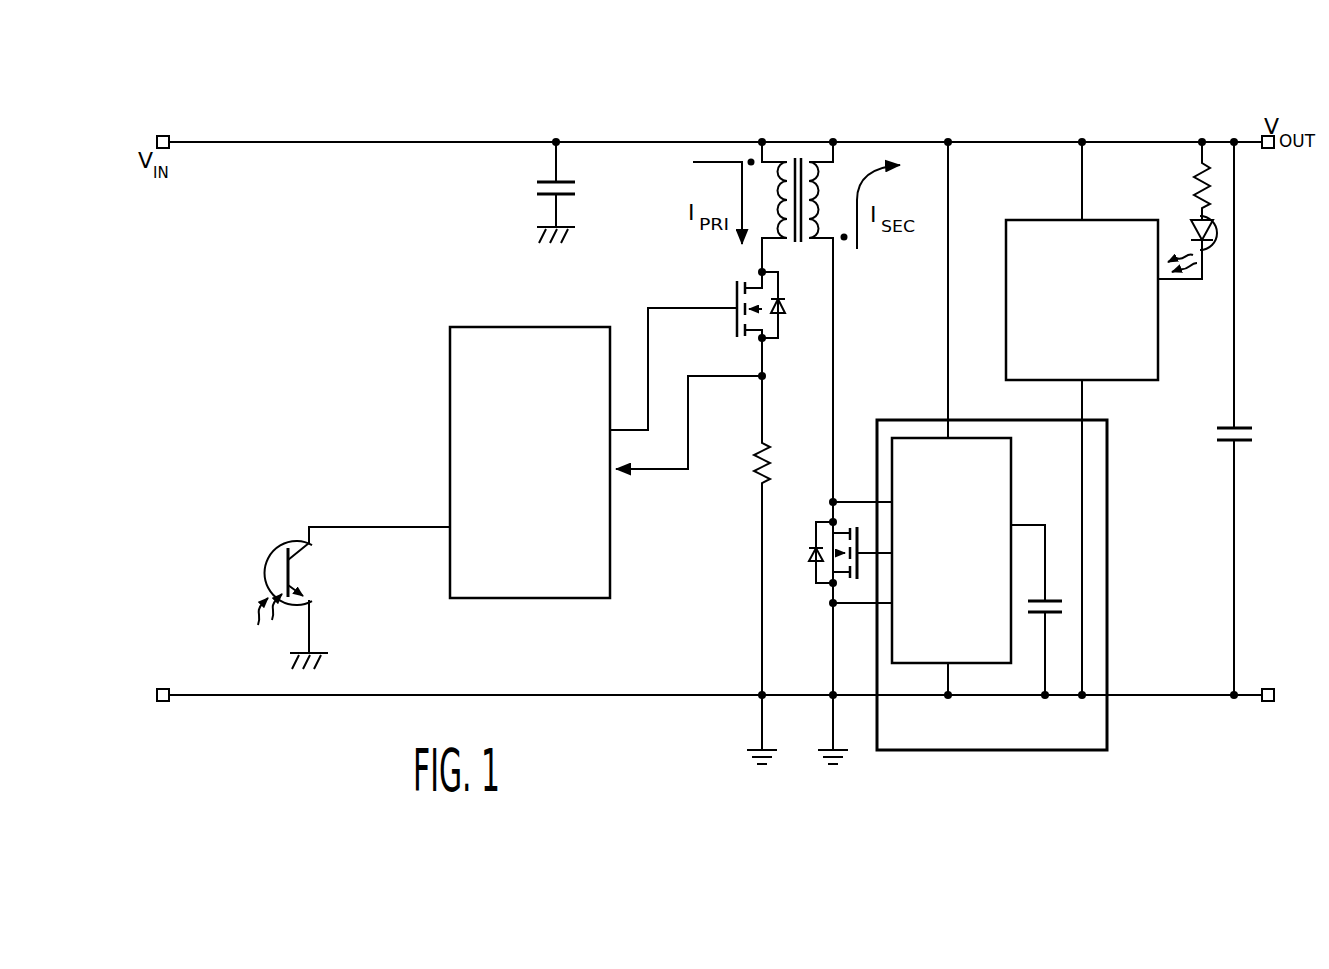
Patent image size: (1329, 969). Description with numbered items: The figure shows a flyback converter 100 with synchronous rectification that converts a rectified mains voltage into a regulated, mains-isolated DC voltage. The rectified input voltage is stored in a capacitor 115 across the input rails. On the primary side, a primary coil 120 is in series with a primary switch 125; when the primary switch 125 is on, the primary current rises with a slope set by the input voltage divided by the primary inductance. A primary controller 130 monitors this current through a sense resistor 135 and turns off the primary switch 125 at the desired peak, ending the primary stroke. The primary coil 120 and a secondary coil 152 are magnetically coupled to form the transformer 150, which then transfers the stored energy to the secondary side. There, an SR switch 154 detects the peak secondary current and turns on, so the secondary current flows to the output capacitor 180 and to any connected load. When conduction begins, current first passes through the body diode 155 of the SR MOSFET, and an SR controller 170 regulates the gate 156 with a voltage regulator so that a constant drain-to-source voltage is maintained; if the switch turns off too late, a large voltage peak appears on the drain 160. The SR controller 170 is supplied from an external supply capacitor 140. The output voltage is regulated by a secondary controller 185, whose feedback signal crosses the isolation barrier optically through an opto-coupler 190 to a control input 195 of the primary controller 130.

The flyback converter 100 is at (1009, 78).
The capacitor 115 is at (537, 188).
The primary coil 120 is at (762, 206).
The primary switch 125 is at (714, 300).
The primary controller 130 is at (496, 600).
The sense resistor 135 is at (758, 466).
The supply capacitor 140 is at (1063, 612).
The transformer 150 is at (806, 148).
The secondary coil 152 is at (835, 179).
The SR switch 154 is at (818, 594).
The body diode 155 is at (810, 558).
The gate 156 is at (864, 562).
The drain 160 is at (834, 499).
The SR controller 170 is at (1108, 742).
The output capacitor 180 is at (1256, 418).
The secondary controller 185 is at (1028, 220).
The opto-coupler 190 is at (1178, 198).
The control input 195 is at (402, 527).